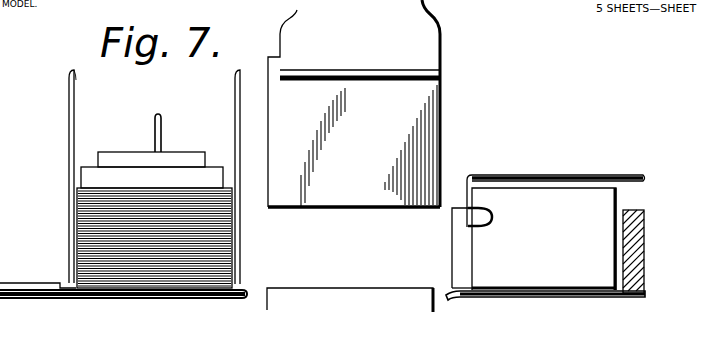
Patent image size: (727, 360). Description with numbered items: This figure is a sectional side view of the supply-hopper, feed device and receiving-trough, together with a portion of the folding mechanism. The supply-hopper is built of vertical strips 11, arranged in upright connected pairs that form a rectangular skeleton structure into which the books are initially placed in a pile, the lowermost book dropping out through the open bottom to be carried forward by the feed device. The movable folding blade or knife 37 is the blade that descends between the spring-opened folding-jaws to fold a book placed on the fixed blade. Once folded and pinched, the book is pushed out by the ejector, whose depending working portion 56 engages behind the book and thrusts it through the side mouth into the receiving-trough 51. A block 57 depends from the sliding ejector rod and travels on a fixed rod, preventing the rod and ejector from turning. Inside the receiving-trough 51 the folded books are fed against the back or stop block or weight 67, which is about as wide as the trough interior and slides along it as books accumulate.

The vertical strips 11 is at (67, 153).
The back or stop block or weight 67 is at (168, 175).
The folding blade or knife 37 is at (354, 103).
The block 57 is at (555, 175).
The depending working portion 56 is at (492, 217).
The receiving-trough 51 is at (660, 250).